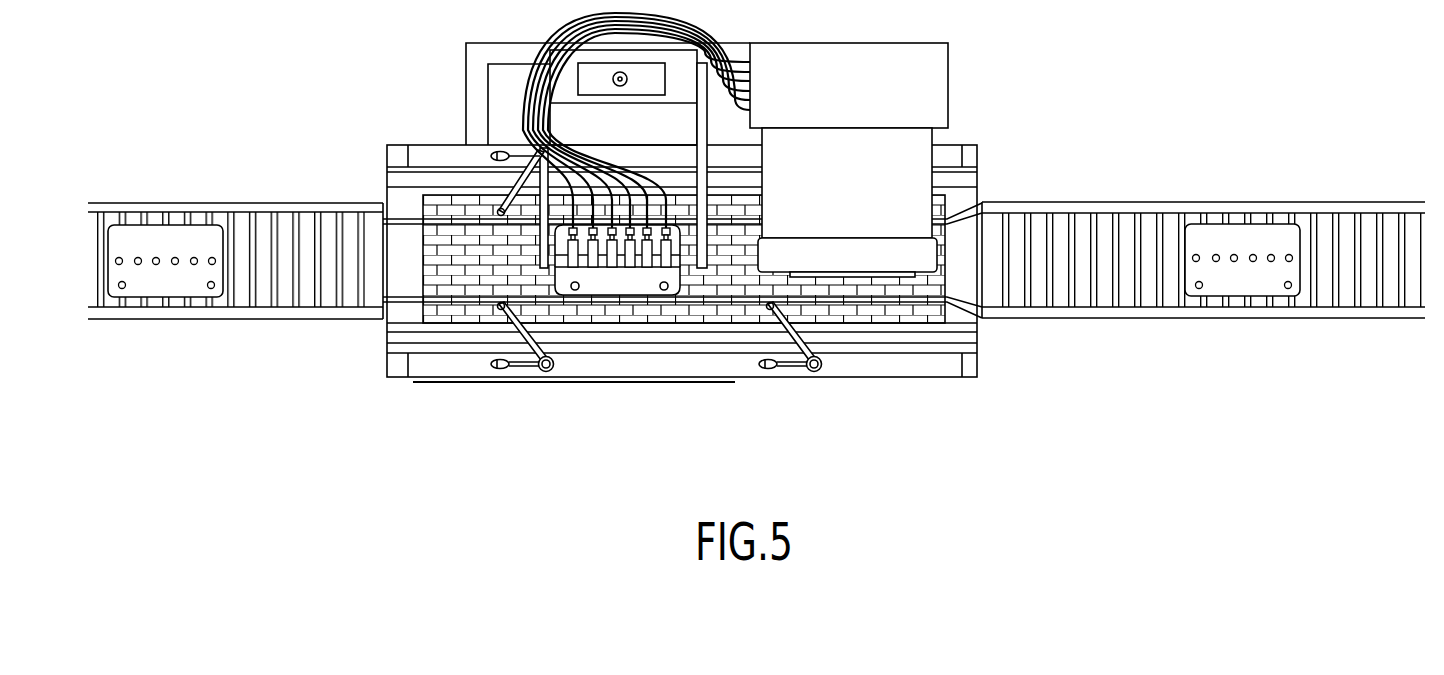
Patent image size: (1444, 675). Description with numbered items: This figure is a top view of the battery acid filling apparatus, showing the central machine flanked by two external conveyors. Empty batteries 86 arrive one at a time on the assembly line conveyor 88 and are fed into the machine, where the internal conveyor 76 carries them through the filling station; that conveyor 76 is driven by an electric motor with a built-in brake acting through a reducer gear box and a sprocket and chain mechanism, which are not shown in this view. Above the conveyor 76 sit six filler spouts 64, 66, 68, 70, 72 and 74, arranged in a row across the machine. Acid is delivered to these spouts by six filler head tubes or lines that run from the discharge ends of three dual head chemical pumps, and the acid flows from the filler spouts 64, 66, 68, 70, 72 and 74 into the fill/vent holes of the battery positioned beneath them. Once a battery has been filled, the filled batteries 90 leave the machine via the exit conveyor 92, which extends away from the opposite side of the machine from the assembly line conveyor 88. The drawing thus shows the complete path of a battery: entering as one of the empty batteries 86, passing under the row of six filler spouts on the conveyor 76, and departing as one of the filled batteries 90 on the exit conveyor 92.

The filler spout 64 is at (557, 242).
The filler spout 66 is at (584, 242).
The filler spout 68 is at (600, 242).
The filler spout 70 is at (628, 242).
The filler spout 72 is at (645, 242).
The filler spout 74 is at (663, 242).
The conveyor 76 is at (880, 318).
The empty batteries 86 is at (1261, 290).
The assembly line conveyor 88 is at (1364, 240).
The filled batteries 90 is at (175, 237).
The exit conveyor 92 is at (140, 203).